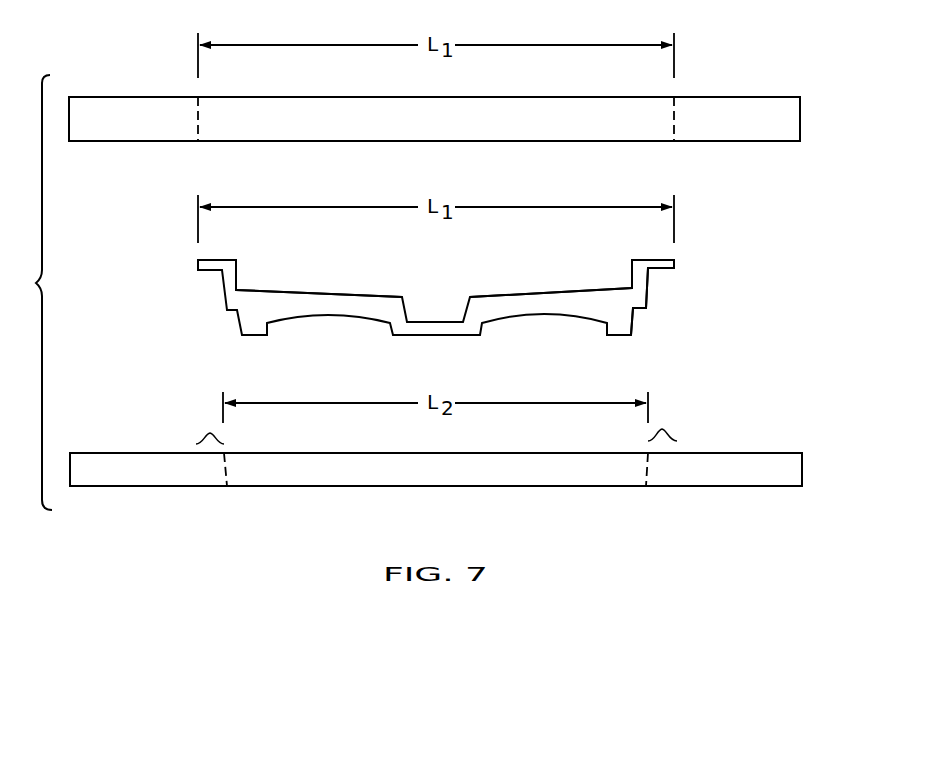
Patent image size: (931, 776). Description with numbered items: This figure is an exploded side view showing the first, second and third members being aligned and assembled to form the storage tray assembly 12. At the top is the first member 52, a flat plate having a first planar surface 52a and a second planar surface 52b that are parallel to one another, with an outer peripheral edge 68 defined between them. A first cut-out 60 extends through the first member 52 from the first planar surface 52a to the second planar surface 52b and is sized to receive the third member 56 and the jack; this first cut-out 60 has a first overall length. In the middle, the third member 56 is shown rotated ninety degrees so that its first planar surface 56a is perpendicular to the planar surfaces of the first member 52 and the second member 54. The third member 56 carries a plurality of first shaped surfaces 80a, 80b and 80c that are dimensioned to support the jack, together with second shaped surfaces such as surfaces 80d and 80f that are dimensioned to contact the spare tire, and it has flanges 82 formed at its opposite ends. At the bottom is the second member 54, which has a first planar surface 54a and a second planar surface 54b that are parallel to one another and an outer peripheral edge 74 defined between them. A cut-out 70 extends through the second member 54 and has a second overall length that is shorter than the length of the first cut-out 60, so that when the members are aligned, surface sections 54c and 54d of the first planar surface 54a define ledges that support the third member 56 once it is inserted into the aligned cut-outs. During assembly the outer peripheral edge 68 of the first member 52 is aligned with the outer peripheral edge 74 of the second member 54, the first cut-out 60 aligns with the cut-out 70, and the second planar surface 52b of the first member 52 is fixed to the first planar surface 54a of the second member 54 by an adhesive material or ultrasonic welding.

The storage tray assembly 12 is at (29, 292).
The first member 52 is at (753, 95).
The first planar surface 52a is at (707, 95).
The second planar surface 52b is at (728, 142).
The outer peripheral edge 68 is at (802, 117).
The first cut-out 60 is at (539, 115).
The third member 56 is at (673, 267).
The first planar surface 56a is at (622, 320).
The first shaped surface 80a is at (330, 294).
The first shaped surface 80b is at (432, 321).
The first shaped surface 80c is at (540, 293).
The second shaped surface 80d is at (253, 337).
The second shaped surface 80f is at (618, 337).
The flanges 82 is at (205, 265).
The second member 54 is at (785, 452).
The first planar surface 54a is at (737, 452).
The second planar surface 54b is at (719, 487).
The surface section 54c is at (210, 433).
The surface section 54d is at (662, 428).
The outer peripheral edge 74 is at (803, 469).
The cut-out 70 is at (533, 468).